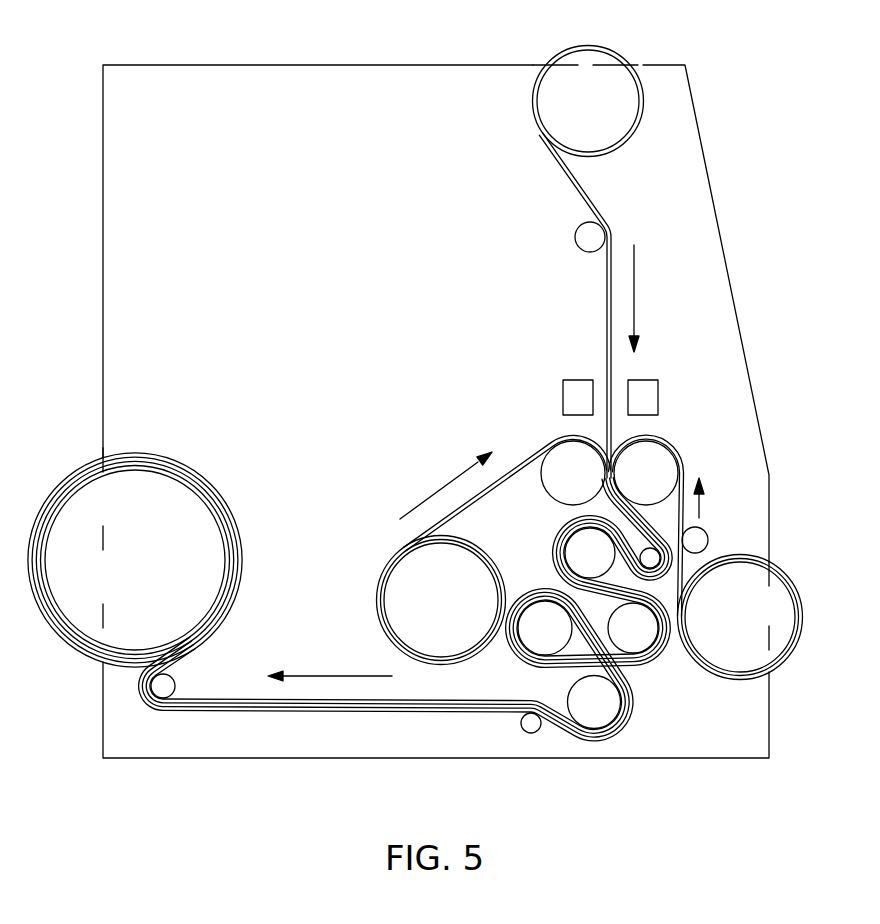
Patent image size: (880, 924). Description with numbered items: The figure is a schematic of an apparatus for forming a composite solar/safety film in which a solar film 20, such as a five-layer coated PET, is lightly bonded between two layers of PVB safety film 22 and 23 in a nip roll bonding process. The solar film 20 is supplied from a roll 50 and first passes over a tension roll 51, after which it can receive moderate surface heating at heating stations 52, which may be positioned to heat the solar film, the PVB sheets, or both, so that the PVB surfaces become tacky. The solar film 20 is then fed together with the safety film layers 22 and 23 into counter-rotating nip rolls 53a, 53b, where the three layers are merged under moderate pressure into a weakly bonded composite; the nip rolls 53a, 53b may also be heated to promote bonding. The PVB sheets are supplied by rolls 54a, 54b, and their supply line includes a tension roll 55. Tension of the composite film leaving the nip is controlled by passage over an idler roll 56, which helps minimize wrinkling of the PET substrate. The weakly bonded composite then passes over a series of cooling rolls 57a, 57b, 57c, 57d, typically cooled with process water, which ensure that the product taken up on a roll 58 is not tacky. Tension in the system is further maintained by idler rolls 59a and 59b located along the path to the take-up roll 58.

The solar film 20 is at (609, 246).
The safety film 22 is at (513, 467).
The safety film 23 is at (686, 474).
The roll 50 is at (606, 48).
The tension roll 51 is at (582, 250).
The heating stations 52 is at (563, 388).
The nip roll 53a is at (555, 442).
The nip roll 53b is at (662, 440).
The roll 54a is at (378, 610).
The roll 54b is at (707, 672).
The tension roll 55 is at (707, 533).
The idler roll 56 is at (600, 517).
The cooling roll 57a is at (576, 551).
The cooling roll 57b is at (572, 589).
The cooling roll 57c is at (627, 664).
The cooling roll 57d is at (573, 700).
The roll 58 is at (241, 570).
The idler roll 59a is at (527, 731).
The idler roll 59b is at (174, 682).